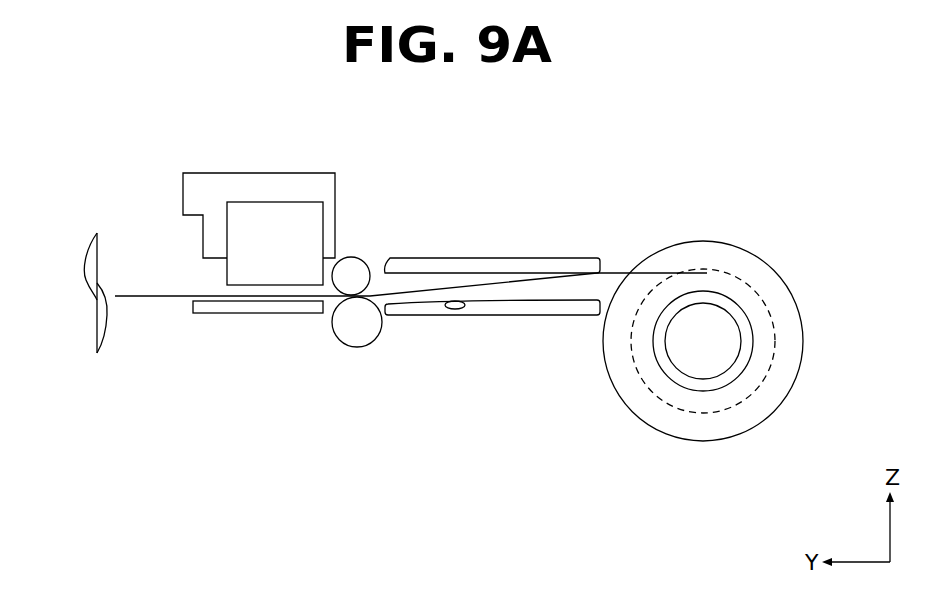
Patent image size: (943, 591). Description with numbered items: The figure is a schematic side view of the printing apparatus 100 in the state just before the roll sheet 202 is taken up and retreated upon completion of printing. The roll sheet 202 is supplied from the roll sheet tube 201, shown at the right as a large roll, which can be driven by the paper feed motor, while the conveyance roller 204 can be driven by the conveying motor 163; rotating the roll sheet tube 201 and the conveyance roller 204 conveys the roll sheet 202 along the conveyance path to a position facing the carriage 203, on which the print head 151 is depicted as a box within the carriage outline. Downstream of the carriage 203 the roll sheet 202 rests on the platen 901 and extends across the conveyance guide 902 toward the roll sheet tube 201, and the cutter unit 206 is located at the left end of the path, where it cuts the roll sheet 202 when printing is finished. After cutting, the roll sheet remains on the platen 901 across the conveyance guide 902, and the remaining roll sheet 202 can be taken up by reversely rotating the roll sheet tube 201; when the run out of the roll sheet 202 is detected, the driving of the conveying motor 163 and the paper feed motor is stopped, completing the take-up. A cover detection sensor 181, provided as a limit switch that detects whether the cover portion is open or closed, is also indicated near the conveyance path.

The printing apparatus 100 is at (70, 148).
The print head 151 is at (280, 201).
The conveying motor 163 is at (363, 347).
The cover detection sensor 181 is at (455, 309).
The roll sheet tube 201 is at (702, 442).
The roll sheet 202 is at (614, 272).
The carriage 203 is at (183, 189).
The conveyance roller 204 is at (354, 257).
The cutter unit 206 is at (100, 353).
The platen 901 is at (258, 314).
The conveyance guide 902 is at (518, 316).